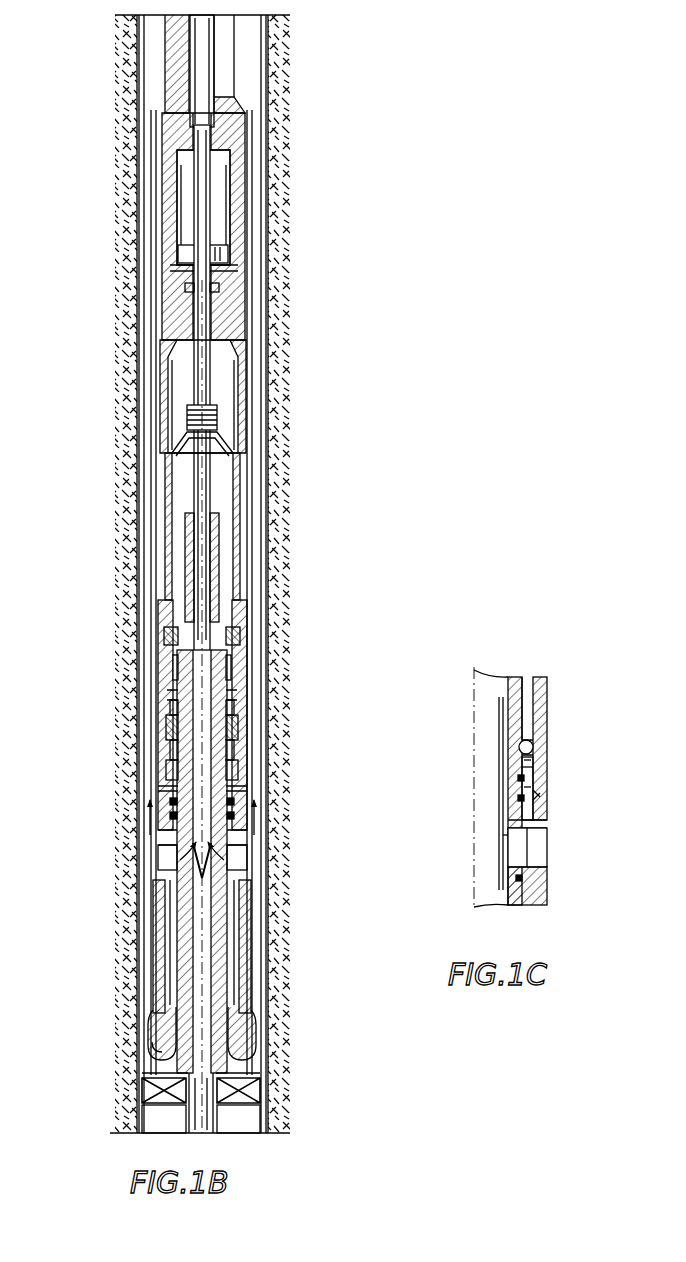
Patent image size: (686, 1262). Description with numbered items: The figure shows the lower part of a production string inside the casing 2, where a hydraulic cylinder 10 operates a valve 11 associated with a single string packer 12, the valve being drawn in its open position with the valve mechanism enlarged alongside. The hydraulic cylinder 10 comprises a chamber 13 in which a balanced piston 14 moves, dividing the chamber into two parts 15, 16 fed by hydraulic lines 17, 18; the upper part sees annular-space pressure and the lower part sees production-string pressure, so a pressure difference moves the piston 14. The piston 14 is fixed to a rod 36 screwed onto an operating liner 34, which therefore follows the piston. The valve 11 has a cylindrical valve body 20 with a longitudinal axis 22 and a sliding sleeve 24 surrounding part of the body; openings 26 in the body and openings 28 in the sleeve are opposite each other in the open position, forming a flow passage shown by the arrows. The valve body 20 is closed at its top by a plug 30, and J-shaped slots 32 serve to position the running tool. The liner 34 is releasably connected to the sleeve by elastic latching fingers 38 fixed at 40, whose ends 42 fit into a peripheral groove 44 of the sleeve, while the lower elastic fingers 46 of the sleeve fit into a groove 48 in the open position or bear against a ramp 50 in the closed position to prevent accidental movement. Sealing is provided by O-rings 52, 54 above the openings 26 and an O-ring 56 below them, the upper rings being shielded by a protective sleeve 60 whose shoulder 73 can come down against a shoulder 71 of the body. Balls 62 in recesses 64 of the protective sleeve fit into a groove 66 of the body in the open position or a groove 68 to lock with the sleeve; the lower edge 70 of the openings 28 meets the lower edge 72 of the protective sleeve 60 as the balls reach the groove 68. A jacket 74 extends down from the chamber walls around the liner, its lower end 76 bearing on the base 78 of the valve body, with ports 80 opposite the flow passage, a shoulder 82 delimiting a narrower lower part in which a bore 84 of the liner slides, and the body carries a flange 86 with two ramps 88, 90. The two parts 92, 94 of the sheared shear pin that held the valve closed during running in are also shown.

In FIG. 1B, the casing 2 is at (137, 230).
In FIG. 1B, the hydraulic cylinder 10 is at (124, 181).
In FIG. 1B, the valve 11 is at (125, 536).
In FIG. 1B, the single string packer 12 is at (262, 1120).
In FIG. 1B, the chamber 13 is at (240, 207).
In FIG. 1B, the piston 14 is at (228, 250).
In FIG. 1B, the chamber part 15 is at (222, 185).
In FIG. 1B, the chamber part 16 is at (235, 268).
In FIG. 1B, the hydraulic line 17 is at (242, 133).
In FIG. 1B, the hydraulic line 18 is at (165, 112).
In FIG. 1B, the valve body 20 is at (245, 685).
In FIG. 1C, the valve body 20 is at (512, 677).
In FIG. 1B, the longitudinal axis 22 is at (185, 915).
In FIG. 1C, the longitudinal axis 22 is at (474, 900).
In FIG. 1B, the sliding sleeve 24 is at (160, 790).
In FIG. 1C, the sliding sleeve 24 is at (547, 677).
In FIG. 1B, the openings 26 is at (252, 815).
In FIG. 1C, the openings 26 is at (510, 835).
In FIG. 1B, the openings 28 is at (247, 860).
In FIG. 1C, the openings 28 is at (540, 857).
In FIG. 1B, the plug 30 is at (233, 453).
In FIG. 1B, the J-shaped slots 32 is at (183, 615).
In FIG. 1B, the operating liner 34 is at (242, 503).
In FIG. 1B, the rod 36 is at (208, 313).
In FIG. 1B, the elastic latching fingers 38 is at (237, 663).
In FIG. 1B, the fixing point of fingers 40 is at (177, 625).
In FIG. 1B, the ends of elastic fingers 42 is at (172, 748).
In FIG. 1B, the peripheral groove 44 is at (170, 770).
In FIG. 1B, the elastic latching fingers 46 is at (165, 975).
In FIG. 1B, the groove 48 is at (160, 1010).
In FIG. 1B, the ramp 50 is at (178, 945).
In FIG. 1C, the O-ring 52 is at (537, 777).
In FIG. 1C, the O-ring 54 is at (537, 793).
In FIG. 1C, the O-ring 56 is at (518, 883).
In FIG. 1B, the protective sleeve 60 is at (170, 805).
In FIG. 1C, the protective sleeve 60 is at (522, 777).
In FIG. 1C, the balls 62 is at (517, 740).
In FIG. 1C, the recesses 64 is at (529, 740).
In FIG. 1C, the peripheral groove 66 is at (520, 763).
In FIG. 1C, the peripheral groove 68 is at (540, 803).
In FIG. 1C, the lower edge of orifices 70 is at (540, 880).
In FIG. 1C, the shoulder 71 is at (512, 767).
In FIG. 1C, the lower edge of protective sleeve 72 is at (540, 828).
In FIG. 1C, the shoulder 73 is at (520, 787).
In FIG. 1B, the jacket 74 is at (244, 413).
In FIG. 1B, the lower end of jacket 76 is at (158, 1048).
In FIG. 1B, the base of valve body 78 is at (255, 1085).
In FIG. 1B, the ports 80 is at (247, 840).
In FIG. 1B, the shoulder 82 is at (167, 703).
In FIG. 1B, the bore 84 is at (170, 725).
In FIG. 1B, the flange 86 is at (177, 672).
In FIG. 1B, the ramp 88 is at (167, 695).
In FIG. 1B, the ramp 90 is at (173, 643).
In FIG. 1B, the shear pin part 92 is at (241, 480).
In FIG. 1B, the shear pin part 94 is at (241, 387).